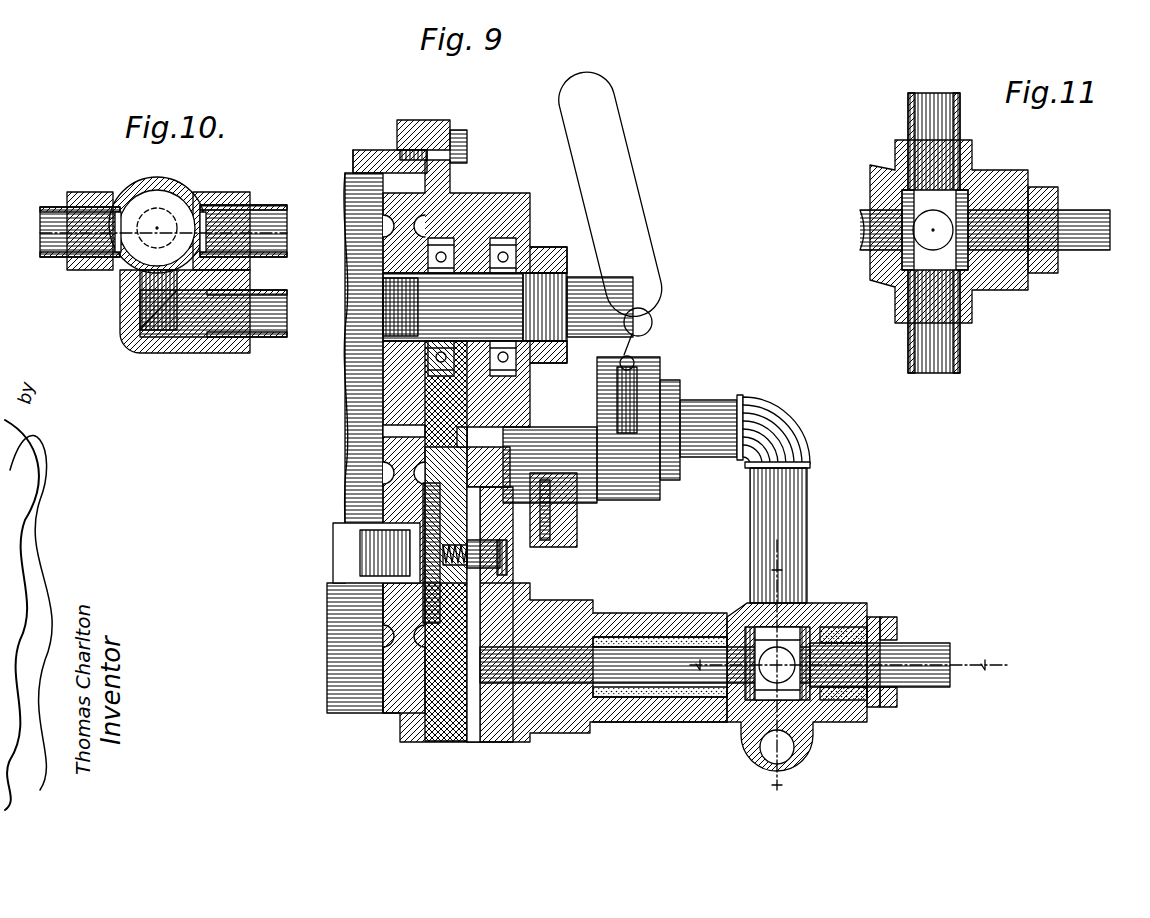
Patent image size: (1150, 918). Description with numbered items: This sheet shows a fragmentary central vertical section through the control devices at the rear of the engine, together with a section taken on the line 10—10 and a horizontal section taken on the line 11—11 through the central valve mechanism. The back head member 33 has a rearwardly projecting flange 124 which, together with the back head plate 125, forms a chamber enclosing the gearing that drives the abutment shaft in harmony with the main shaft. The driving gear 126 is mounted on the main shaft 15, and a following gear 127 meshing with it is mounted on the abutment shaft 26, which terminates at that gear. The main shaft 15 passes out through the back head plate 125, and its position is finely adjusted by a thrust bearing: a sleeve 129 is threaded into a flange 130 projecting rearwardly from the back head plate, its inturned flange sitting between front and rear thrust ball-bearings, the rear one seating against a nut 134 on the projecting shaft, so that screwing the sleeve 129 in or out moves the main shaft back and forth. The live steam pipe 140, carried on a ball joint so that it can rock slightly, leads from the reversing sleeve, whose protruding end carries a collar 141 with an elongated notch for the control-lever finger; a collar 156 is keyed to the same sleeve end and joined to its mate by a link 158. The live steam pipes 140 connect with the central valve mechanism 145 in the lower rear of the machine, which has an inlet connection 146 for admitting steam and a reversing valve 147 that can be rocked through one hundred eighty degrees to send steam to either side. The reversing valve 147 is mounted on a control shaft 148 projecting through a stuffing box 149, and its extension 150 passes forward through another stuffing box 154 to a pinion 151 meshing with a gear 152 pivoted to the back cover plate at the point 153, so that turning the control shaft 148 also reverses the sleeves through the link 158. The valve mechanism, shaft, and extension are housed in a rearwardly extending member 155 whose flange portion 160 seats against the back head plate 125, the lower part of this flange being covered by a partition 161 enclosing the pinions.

In FIG. 9, the section line 10— 10 is at (789, 670).
In FIG. 9, the section line 11— 11 is at (844, 657).
In FIG. 9, the main shaft 15 is at (380, 300).
In FIG. 9, the abutment shaft 26 is at (335, 545).
In FIG. 9, the back head member 33 is at (353, 152).
In FIG. 9, the rearwardly projecting flange 124 is at (368, 150).
In FIG. 9, the back head plate 125 is at (445, 178).
In FIG. 9, the driving gear 126 is at (383, 415).
In FIG. 9, the following gear 127 is at (395, 447).
In FIG. 9, the sleeve 129 is at (505, 212).
In FIG. 9, the flange 130 is at (470, 193).
In FIG. 9, the nut 134 is at (555, 262).
In FIG. 9, the live steam pipe 140 is at (785, 490).
In FIG. 10, the live steam pipe 140 is at (275, 207).
In FIG. 11, the live steam pipe 140 is at (908, 105).
In FIG. 9, the collar 141 is at (665, 360).
In FIG. 9, the central valve mechanism 145 is at (823, 603).
In FIG. 10, the central valve mechanism 145 is at (138, 182).
In FIG. 11, the central valve mechanism 145 is at (895, 155).
In FIG. 9, the inlet connection 146 is at (795, 750).
In FIG. 10, the inlet connection 146 is at (275, 340).
In FIG. 9, the reversing valve 147 is at (777, 665).
In FIG. 10, the reversing valve 147 is at (183, 205).
In FIG. 11, the reversing valve 147 is at (870, 200).
In FIG. 9, the control shaft 148 is at (935, 645).
In FIG. 11, the control shaft 148 is at (1095, 240).
In FIG. 9, the stuffing box 149 is at (872, 625).
In FIG. 9, the extension 150 is at (665, 640).
In FIG. 9, the pinion 151 is at (493, 700).
In FIG. 9, the gear 152 is at (497, 592).
In FIG. 9, the pivot point 153 is at (485, 565).
In FIG. 9, the stuffing box 154 is at (622, 614).
In FIG. 9, the rearwardly extending member 155 is at (628, 722).
In FIG. 9, the collar 156 is at (527, 459).
In FIG. 9, the link 158 is at (555, 525).
In FIG. 9, the flange portion 160 is at (445, 452).
In FIG. 9, the partition 161 is at (507, 560).